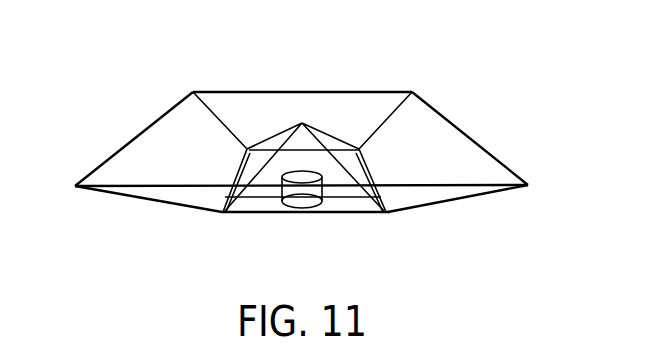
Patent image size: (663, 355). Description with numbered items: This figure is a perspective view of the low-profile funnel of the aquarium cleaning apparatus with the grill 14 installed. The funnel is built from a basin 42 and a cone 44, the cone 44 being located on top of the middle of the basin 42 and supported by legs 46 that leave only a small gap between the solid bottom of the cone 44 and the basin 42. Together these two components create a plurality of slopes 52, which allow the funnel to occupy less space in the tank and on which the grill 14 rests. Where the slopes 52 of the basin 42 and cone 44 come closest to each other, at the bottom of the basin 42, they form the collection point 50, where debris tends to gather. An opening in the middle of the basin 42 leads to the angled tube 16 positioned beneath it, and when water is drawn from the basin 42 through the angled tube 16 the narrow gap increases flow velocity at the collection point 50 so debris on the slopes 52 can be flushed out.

The grill 14 is at (177, 135).
The basin 42 is at (250, 91).
The cone 44 is at (302, 121).
The slopes 52 is at (338, 145).
The collection point 50 is at (218, 203).
The angled tube 16 is at (288, 211).
The legs 46 is at (387, 208).